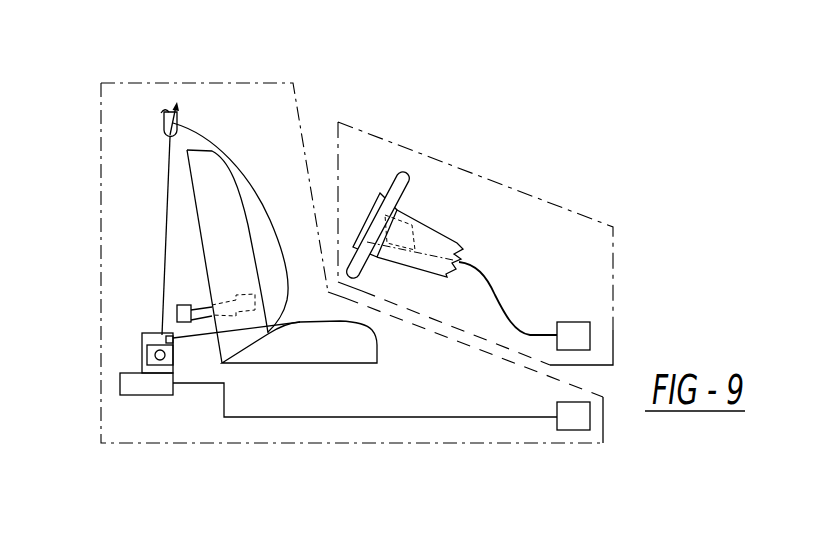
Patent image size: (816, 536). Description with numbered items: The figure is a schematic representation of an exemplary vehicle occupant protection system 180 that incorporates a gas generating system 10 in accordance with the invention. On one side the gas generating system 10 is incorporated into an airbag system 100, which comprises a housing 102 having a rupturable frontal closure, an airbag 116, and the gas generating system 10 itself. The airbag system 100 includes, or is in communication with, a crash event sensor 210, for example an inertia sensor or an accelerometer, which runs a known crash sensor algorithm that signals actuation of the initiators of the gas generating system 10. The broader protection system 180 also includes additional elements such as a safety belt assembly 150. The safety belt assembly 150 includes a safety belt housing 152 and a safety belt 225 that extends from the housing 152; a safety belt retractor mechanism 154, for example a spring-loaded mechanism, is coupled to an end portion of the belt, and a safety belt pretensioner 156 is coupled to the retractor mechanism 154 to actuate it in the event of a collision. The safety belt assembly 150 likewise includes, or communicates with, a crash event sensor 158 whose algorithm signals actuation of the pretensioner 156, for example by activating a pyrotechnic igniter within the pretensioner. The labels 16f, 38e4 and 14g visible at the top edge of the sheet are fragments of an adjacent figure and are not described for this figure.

The safety belt assembly 150 is at (211, 76).
The safety belt 225 is at (237, 153).
The safety belt retractor mechanism 154 is at (142, 333).
The safety belt housing 152 is at (170, 357).
The safety belt pretensioner 156 is at (147, 386).
The airbag system 100 is at (560, 196).
The housing 102 is at (377, 205).
The airbag 116 is at (390, 205).
The gas generating system 10 is at (428, 220).
The crash event sensor 210 is at (578, 330).
The vehicle occupant protection system 180 is at (682, 196).
The crash event sensor 158 is at (575, 425).
The partial label from adjacent figure 16f is at (351, 6).
The partial label from adjacent figure 38e4 is at (478, 0).
The partial label from adjacent figure 14g is at (538, 0).